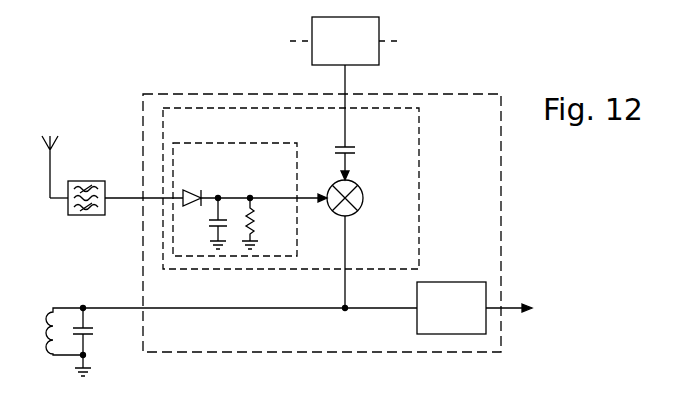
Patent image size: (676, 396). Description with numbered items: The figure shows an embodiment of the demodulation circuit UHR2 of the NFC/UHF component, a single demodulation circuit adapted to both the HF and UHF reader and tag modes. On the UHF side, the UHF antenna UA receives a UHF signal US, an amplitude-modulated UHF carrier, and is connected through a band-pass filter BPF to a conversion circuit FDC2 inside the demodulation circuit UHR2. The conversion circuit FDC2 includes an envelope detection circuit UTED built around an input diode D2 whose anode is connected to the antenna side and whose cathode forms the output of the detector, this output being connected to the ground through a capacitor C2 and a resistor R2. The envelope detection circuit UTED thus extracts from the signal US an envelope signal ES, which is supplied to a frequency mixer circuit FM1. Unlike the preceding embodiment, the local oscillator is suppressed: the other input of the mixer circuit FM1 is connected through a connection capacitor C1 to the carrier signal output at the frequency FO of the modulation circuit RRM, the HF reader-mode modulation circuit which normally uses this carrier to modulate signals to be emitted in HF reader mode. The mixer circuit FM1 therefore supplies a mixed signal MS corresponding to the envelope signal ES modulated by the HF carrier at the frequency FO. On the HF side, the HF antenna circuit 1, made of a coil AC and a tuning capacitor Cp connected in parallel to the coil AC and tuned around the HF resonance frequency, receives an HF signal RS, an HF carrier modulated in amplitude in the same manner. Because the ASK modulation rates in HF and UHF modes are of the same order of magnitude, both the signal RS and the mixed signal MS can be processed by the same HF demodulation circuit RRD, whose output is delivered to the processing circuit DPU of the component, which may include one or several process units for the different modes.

The HF antenna circuit 1 is at (58, 297).
The UHF antenna UA is at (50, 154).
The band-pass filter BPF is at (86, 186).
The UHF signal US is at (144, 190).
The conversion circuit FDC2 is at (228, 136).
The envelope detection circuit UTED is at (290, 169).
The input diode D2 is at (191, 187).
The capacitor C2 is at (203, 223).
The resistor R2 is at (263, 223).
The envelope signal ES is at (264, 190).
The frequency mixer circuit FM1 is at (370, 198).
The connection capacitor C1 is at (360, 159).
The modulation circuit RRM is at (368, 53).
The carrier signal frequency FO is at (353, 106).
The mixed signal MS is at (331, 262).
The HF signal RS is at (250, 299).
The HF demodulation circuit RRD is at (473, 317).
The processing circuit DPU is at (533, 307).
The demodulation circuit UHR2 is at (352, 340).
The coil AC is at (50, 331).
The tuning capacitor Cp is at (96, 342).